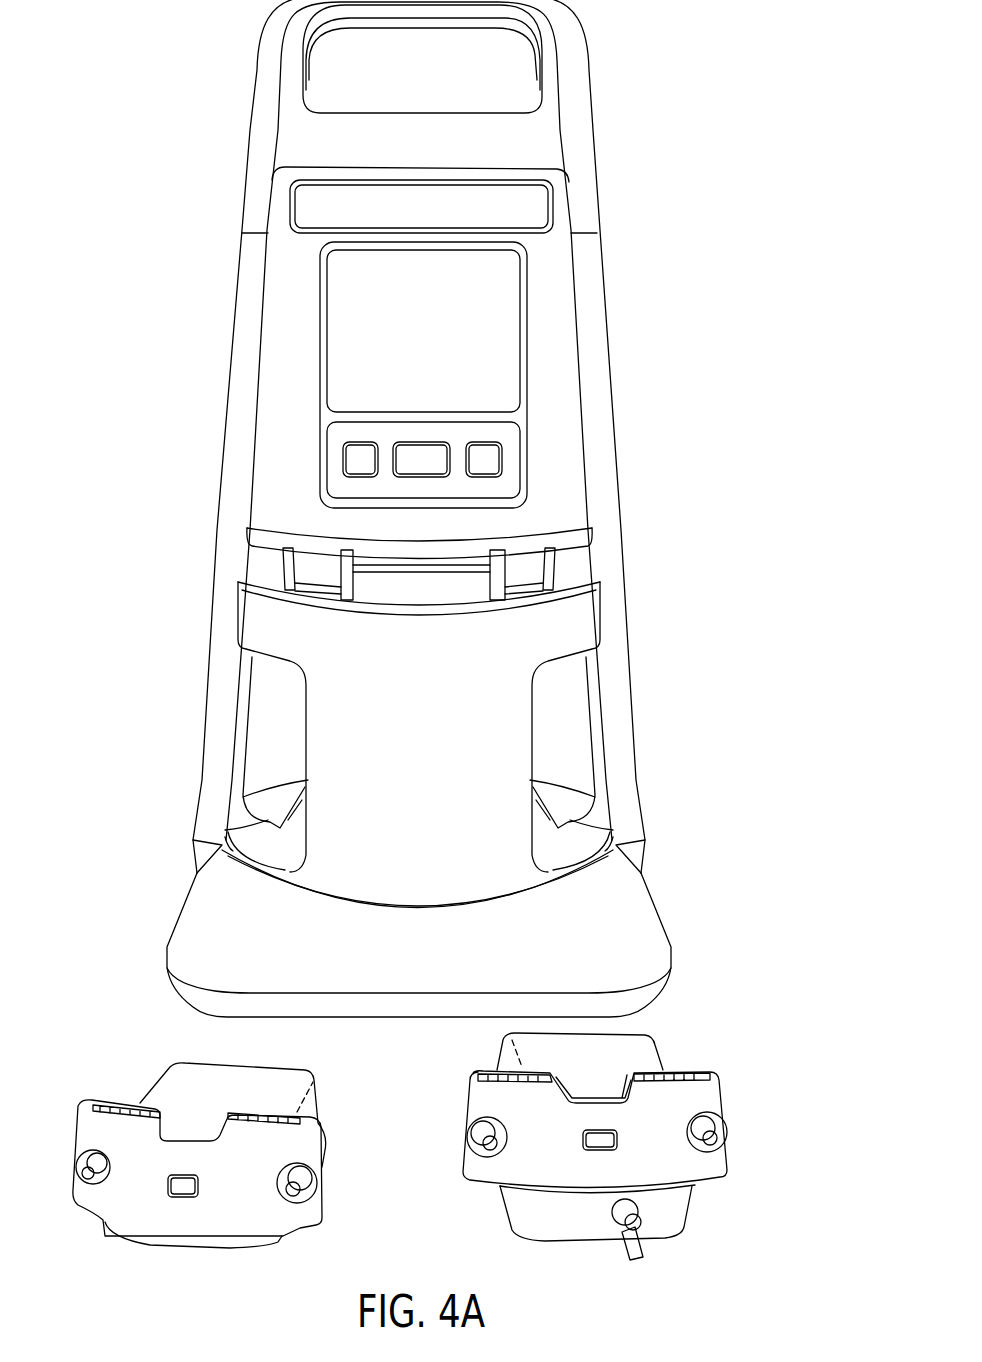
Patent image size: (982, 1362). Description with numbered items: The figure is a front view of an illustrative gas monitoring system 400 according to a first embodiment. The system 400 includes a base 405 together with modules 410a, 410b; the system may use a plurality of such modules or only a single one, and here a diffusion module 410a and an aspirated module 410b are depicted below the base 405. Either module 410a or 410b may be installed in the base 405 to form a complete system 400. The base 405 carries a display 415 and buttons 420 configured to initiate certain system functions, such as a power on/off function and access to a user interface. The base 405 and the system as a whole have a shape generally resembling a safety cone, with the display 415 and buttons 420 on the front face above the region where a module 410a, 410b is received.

The system 400 is at (443, 508).
The base 405 is at (614, 437).
The diffusion module 410a is at (323, 1168).
The aspirated module 410b is at (722, 1117).
The display 415 is at (528, 323).
The buttons 420 is at (505, 460).